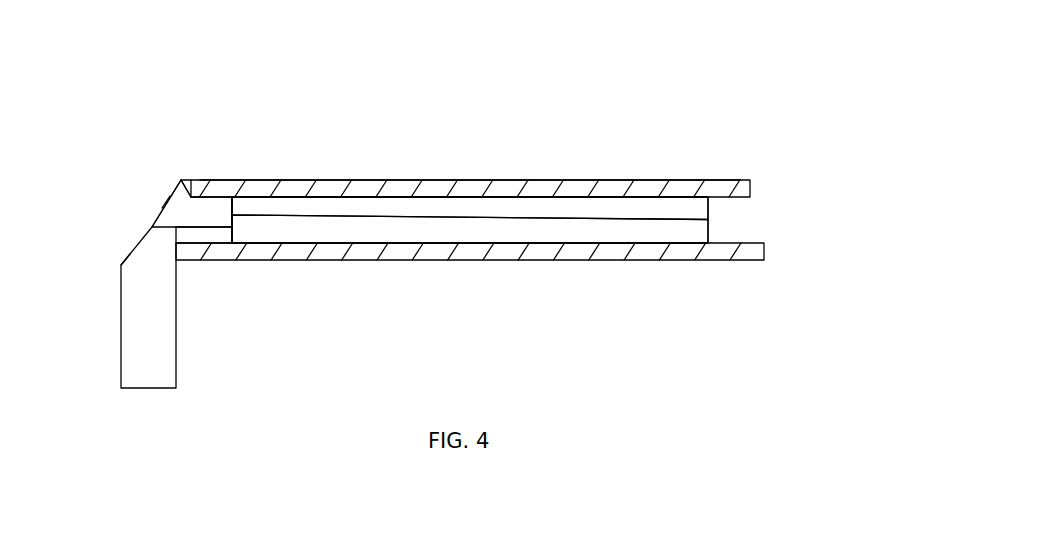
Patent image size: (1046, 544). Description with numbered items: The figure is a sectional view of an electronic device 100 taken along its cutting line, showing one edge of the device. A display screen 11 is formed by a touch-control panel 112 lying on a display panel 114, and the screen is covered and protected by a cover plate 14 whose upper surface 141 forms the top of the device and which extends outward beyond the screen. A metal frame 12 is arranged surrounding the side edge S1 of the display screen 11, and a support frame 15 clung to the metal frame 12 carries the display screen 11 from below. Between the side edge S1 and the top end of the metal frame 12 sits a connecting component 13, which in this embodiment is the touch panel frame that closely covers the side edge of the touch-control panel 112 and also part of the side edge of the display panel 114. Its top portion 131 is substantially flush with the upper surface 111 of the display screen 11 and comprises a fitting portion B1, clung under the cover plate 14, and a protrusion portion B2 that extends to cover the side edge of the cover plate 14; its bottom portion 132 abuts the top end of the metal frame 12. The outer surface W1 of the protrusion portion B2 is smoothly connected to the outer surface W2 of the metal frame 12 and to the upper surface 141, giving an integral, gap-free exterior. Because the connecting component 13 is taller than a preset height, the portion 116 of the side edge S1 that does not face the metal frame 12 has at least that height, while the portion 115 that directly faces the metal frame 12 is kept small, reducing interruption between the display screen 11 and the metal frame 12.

The electronic device 100 is at (608, 45).
The display screen 11 is at (845, 180).
The upper surface of the display screen 111 is at (392, 196).
The touch-control panel 112 is at (708, 208).
The display panel 114 is at (708, 232).
The portion of the side edge facing directly the metal frame 115 is at (229, 231).
The portion of the side edge not facing directly the metal frame 116 is at (232, 215).
The metal frame 12 is at (135, 320).
The connecting component 13 is at (175, 202).
The top portion of the connecting component 131 is at (178, 210).
The bottom portion of the connecting component 132 is at (150, 227).
The cover plate 14 is at (527, 179).
The upper surface of the cover plate 141 is at (305, 180).
The support frame 15 is at (534, 262).
The fitting portion B1 is at (215, 197).
The protrusion portion B2 is at (183, 180).
The outer surface of the protrusion portion W1 is at (160, 206).
The outer surface of the metal frame W2 is at (125, 260).
The side edge of the display screen S1 is at (235, 237).